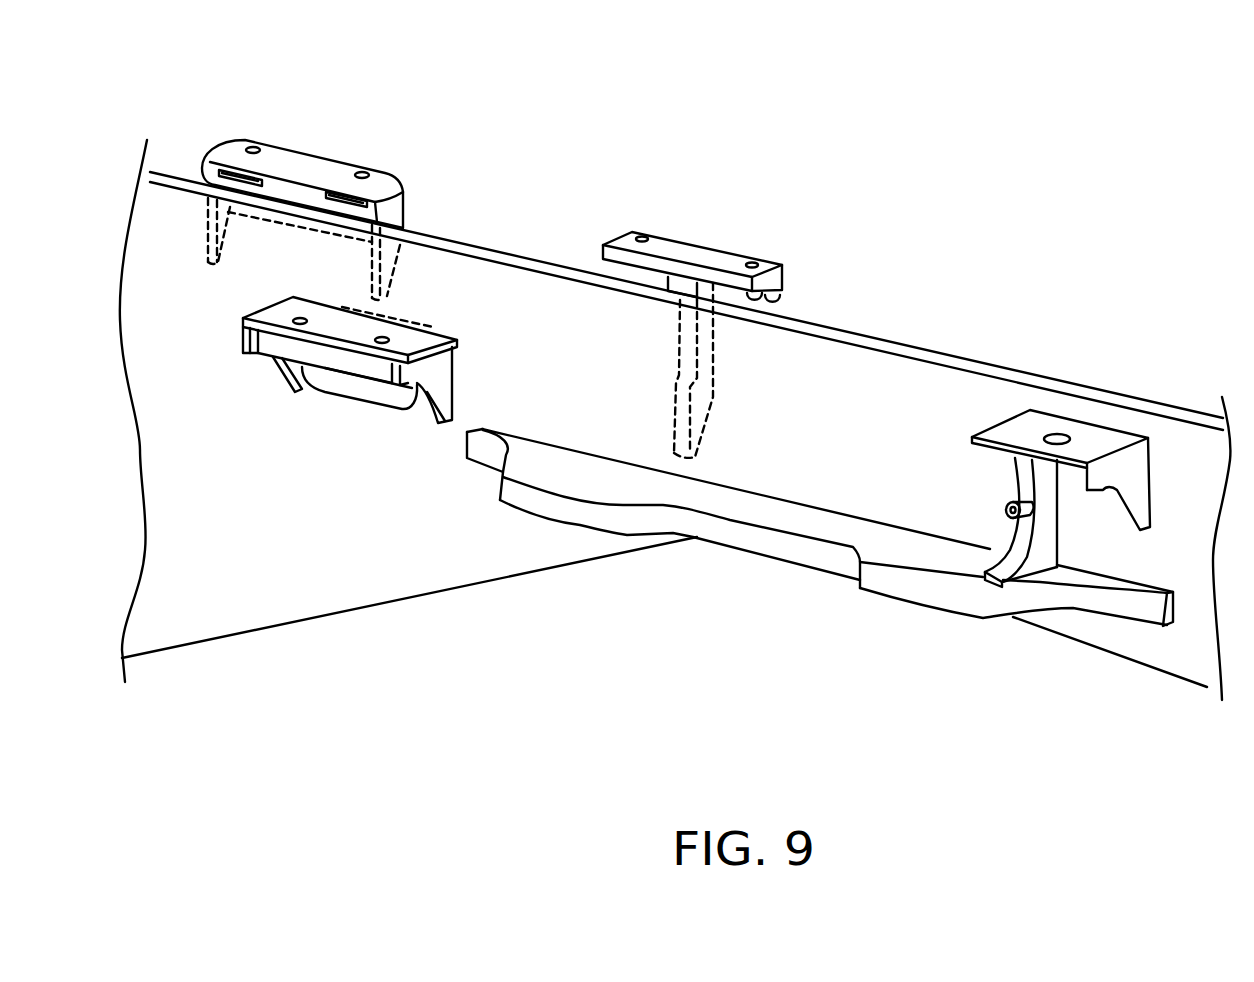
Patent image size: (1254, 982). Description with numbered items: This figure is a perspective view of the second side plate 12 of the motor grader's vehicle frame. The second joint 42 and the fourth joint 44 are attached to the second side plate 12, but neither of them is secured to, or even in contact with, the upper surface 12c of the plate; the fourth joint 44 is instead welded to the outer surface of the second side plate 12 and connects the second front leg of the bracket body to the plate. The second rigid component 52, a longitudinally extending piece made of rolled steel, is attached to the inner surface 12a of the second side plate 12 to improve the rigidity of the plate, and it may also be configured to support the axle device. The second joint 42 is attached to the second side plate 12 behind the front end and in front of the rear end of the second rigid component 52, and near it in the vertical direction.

The second side plate 12 is at (899, 332).
The inner surface 12a is at (415, 573).
The upper surface 12c is at (1000, 370).
The second joint 42 is at (722, 232).
The fourth joint 44 is at (347, 142).
The second rigid component 52 is at (779, 540).